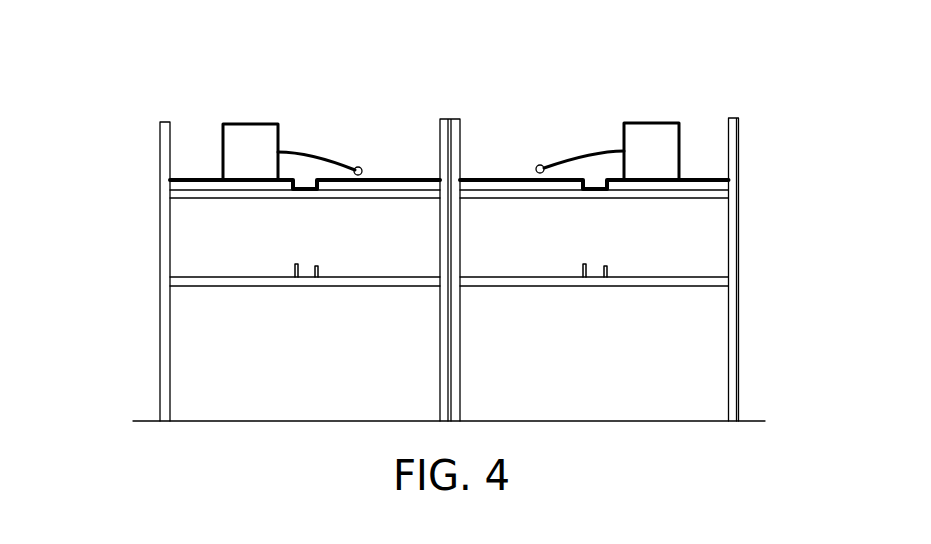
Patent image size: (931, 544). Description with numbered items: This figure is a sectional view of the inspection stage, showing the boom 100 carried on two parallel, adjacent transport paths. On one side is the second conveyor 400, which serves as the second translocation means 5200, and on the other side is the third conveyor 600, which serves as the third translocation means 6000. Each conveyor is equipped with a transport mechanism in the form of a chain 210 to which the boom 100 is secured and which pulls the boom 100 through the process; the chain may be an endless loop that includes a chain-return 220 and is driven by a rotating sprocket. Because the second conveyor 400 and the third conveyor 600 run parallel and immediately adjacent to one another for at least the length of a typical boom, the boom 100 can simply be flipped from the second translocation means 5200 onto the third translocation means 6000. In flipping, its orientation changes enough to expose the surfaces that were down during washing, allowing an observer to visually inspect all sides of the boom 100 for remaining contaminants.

The boom 100 is at (237, 140).
The chain conveyor 210 is at (304, 189).
The chain-return 220 is at (305, 275).
The second conveyor 400 is at (114, 271).
The second translocation means 5200 is at (158, 273).
The third conveyor 600 is at (786, 269).
The third translocation means 6000 is at (740, 235).